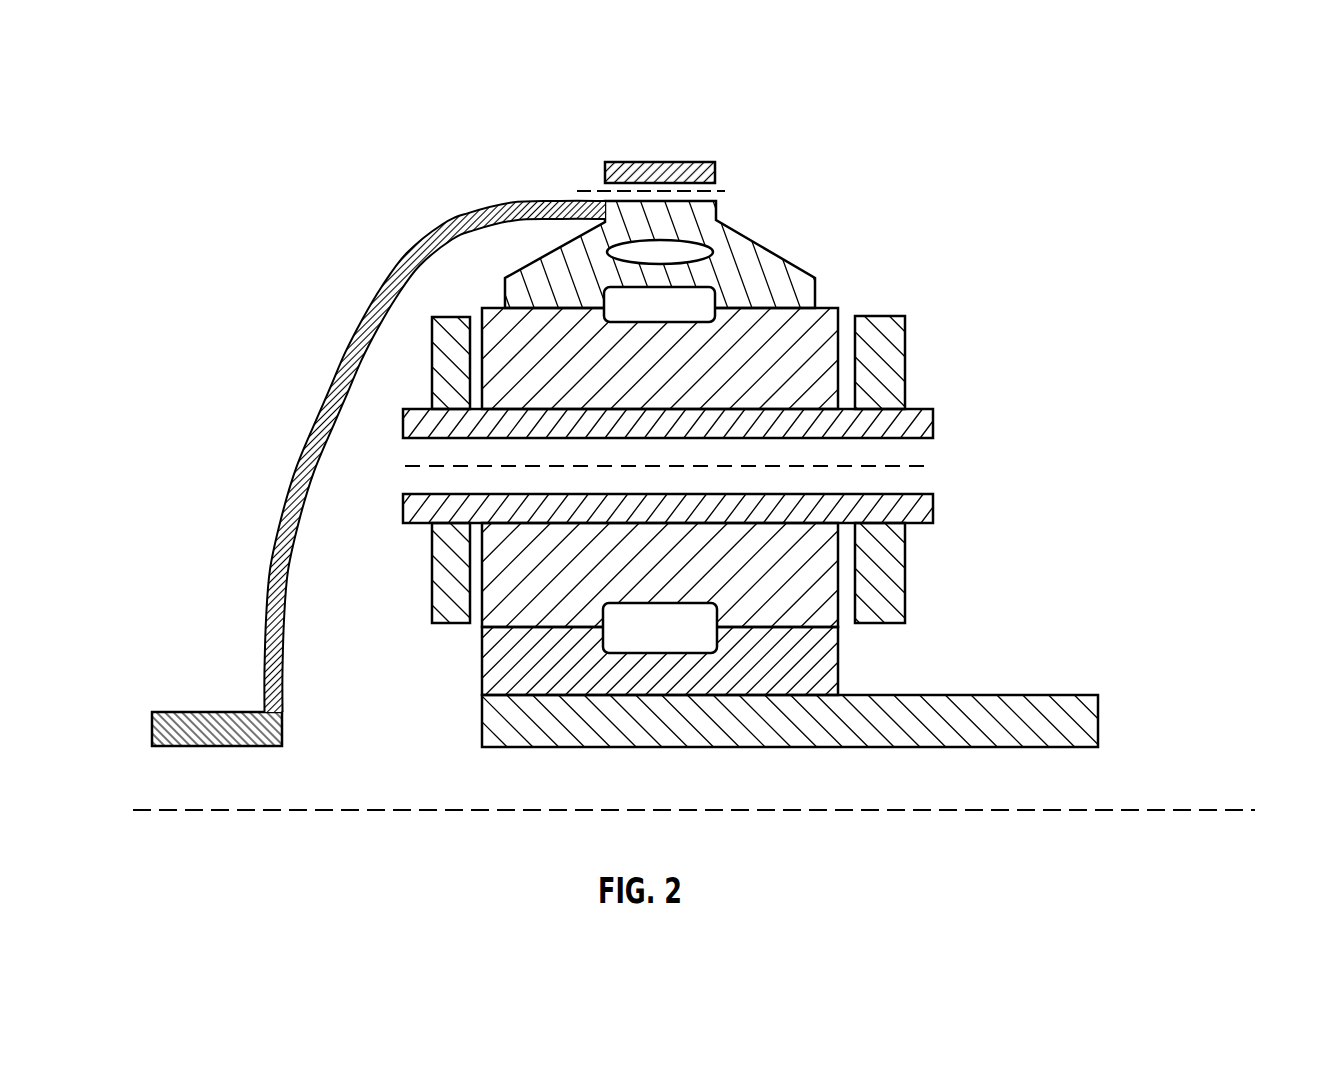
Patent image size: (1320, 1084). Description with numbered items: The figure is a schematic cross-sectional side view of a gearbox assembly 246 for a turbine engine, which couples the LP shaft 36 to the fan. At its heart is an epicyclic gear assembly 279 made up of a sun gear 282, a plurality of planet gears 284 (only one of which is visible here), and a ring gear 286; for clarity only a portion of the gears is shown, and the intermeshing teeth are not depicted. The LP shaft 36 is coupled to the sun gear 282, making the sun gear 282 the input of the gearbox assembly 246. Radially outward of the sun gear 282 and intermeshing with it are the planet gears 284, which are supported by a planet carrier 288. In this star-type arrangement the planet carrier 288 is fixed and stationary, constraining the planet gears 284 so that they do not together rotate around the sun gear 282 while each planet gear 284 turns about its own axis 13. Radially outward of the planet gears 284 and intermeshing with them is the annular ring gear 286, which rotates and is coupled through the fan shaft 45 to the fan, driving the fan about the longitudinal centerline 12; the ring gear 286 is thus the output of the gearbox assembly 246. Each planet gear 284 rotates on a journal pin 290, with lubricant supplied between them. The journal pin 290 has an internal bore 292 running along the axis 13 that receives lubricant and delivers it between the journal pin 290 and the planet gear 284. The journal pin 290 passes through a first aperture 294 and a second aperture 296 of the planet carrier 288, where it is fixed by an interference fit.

The gearbox assembly 246 is at (665, 417).
The epicyclic gear assembly 279 is at (718, 225).
The ring gear 286 is at (765, 248).
The planet gears 284 is at (830, 307).
The planet carrier 288 is at (888, 316).
The journal pin 290 is at (933, 420).
The axis 13 is at (925, 465).
The second aperture 296 is at (934, 528).
The first aperture 294 is at (417, 398).
The internal bore 292 is at (396, 473).
The sun gear 282 is at (482, 653).
The LP shaft 36 is at (1038, 693).
The fan shaft 45 is at (188, 712).
The longitudinal centerline 12 is at (1183, 810).